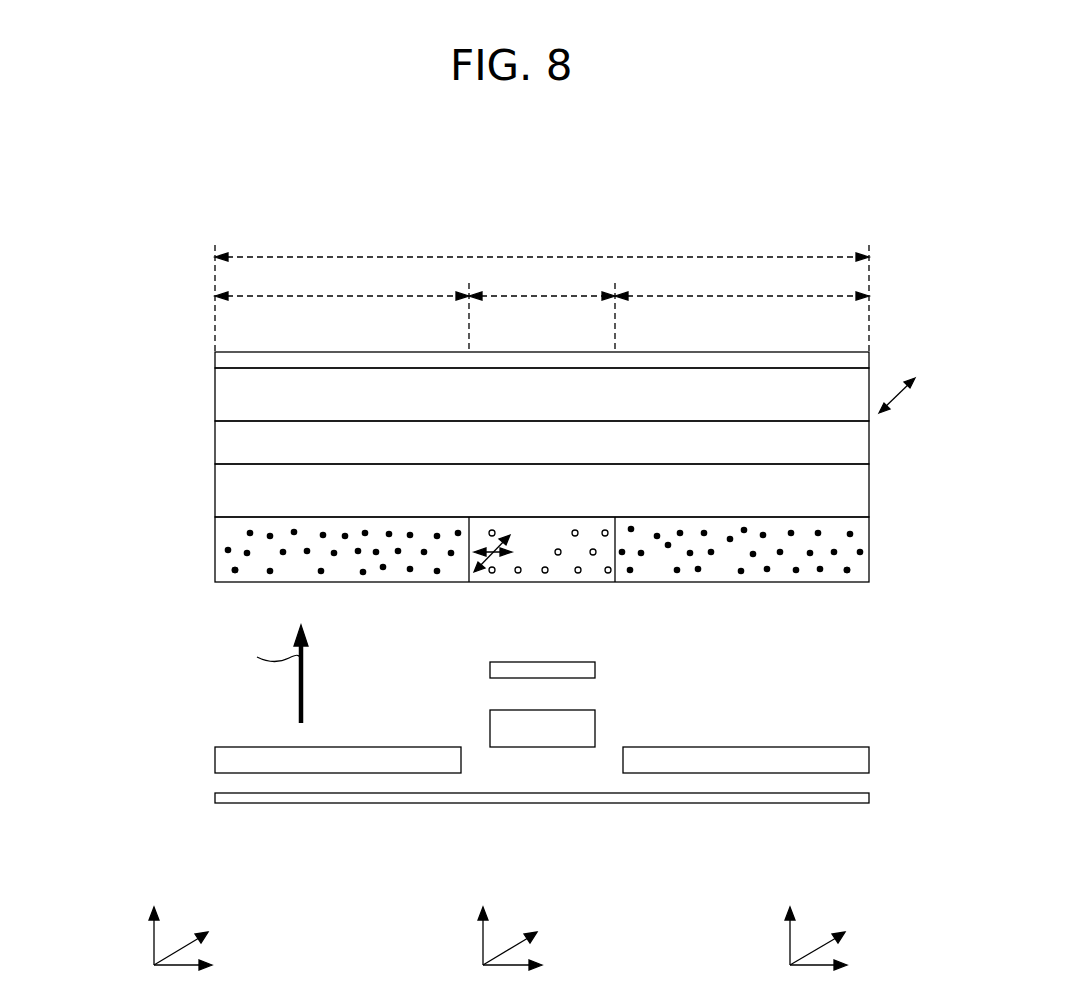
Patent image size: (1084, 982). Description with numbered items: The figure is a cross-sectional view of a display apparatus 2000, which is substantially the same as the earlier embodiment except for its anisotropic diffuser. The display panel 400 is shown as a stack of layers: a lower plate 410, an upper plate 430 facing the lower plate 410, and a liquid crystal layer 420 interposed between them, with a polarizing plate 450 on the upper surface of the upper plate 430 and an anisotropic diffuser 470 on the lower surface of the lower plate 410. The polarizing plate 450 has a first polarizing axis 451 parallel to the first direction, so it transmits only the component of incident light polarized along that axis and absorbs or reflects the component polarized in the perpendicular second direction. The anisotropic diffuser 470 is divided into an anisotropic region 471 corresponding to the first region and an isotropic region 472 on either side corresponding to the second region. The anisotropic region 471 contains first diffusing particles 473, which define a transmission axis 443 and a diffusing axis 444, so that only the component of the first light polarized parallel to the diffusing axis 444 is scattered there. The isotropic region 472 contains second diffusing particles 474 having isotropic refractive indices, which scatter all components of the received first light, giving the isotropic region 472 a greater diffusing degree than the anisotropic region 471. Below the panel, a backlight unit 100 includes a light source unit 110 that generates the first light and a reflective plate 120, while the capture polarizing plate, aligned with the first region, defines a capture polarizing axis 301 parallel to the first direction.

The display apparatus 2000 is at (804, 197).
The display panel 400 is at (112, 352).
The polarizing plate 450 is at (232, 357).
The upper plate 430 is at (232, 397).
The liquid crystal layer 420 is at (232, 433).
The lower plate 410 is at (232, 492).
The anisotropic diffuser 470 is at (210, 573).
The anisotropic region 471 is at (518, 592).
The isotropic region 472 is at (303, 591).
The first diffusing particles 473 is at (578, 575).
The second diffusing particles 474 is at (235, 574).
The transmission axis 443 is at (512, 547).
The diffusing axis 444 is at (512, 554).
The first polarizing axis 451 is at (917, 395).
The capture polarizing axis 301 is at (500, 670).
The backlight unit 100 is at (127, 750).
The light source unit 110 is at (226, 756).
The reflective plate 120 is at (226, 795).